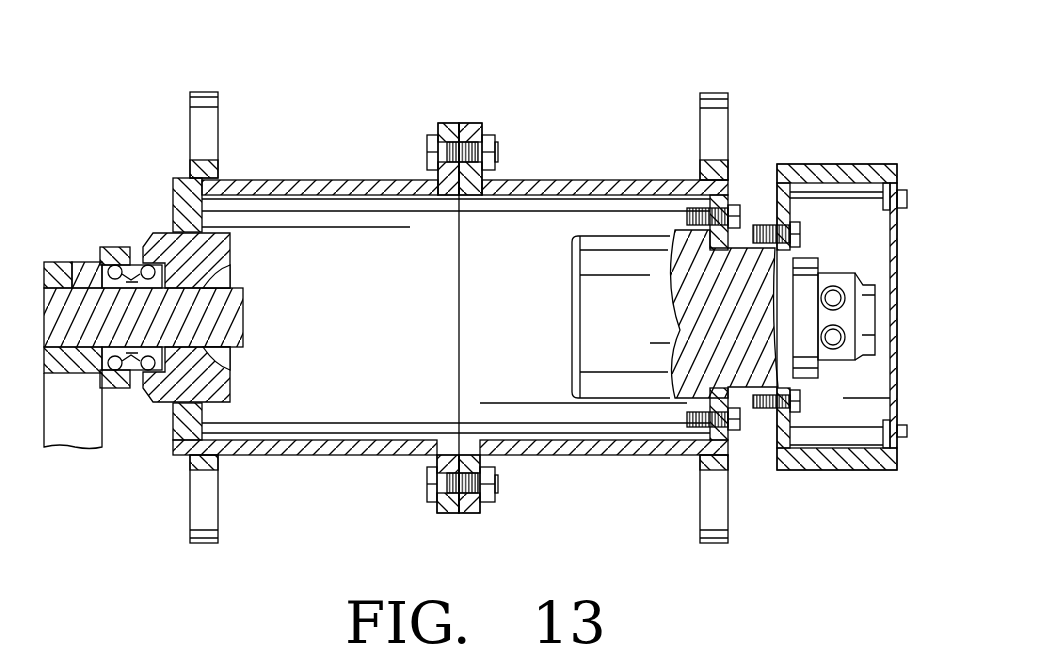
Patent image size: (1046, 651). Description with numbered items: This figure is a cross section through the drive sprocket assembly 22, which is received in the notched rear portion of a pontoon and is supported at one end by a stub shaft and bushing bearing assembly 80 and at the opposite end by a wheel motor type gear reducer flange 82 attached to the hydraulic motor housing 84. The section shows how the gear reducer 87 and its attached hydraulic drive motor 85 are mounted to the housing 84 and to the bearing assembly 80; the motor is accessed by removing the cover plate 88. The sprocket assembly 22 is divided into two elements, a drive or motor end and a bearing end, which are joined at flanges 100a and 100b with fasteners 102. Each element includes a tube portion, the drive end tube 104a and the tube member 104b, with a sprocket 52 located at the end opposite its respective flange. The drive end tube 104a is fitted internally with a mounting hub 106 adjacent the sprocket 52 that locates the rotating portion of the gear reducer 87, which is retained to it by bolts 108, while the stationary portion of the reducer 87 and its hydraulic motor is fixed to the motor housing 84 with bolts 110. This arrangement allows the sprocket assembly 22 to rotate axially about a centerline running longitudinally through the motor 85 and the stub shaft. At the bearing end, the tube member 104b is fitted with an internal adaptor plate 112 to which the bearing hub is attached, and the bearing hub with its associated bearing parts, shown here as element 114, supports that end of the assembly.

The drive sprocket assembly 22 is at (403, 130).
The sprocket 52 is at (204, 92).
The stub shaft and bushing bearing assembly 80 is at (118, 213).
The wheel motor type gear reducer flange 82 is at (764, 400).
The hydraulic motor housing 84 is at (847, 164).
The hydraulic drive motor 85 is at (836, 272).
The gear reducer 87 is at (648, 333).
The cover plate 88 is at (897, 388).
The flange 100a is at (468, 125).
The flange 100b is at (450, 123).
The fasteners 102 is at (493, 130).
The drive end tube 104a is at (600, 180).
The tube member 104b is at (332, 180).
The mounting hub 106 is at (728, 197).
The bolts 108 is at (738, 432).
The bolts 110 is at (792, 410).
The internal adaptor plate 112 is at (157, 402).
The bearing housing 114 is at (173, 212).